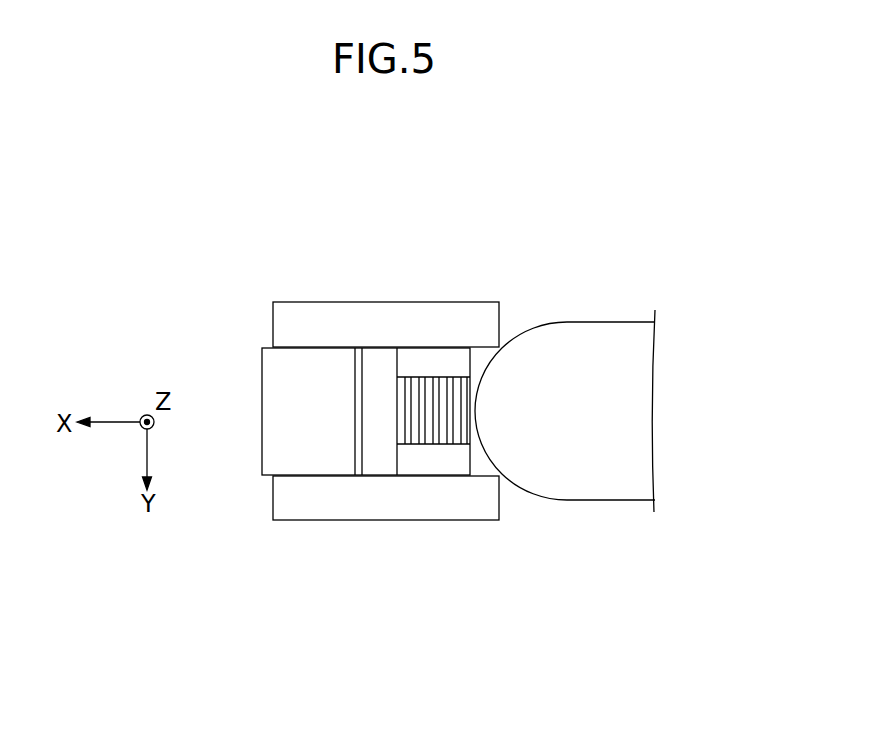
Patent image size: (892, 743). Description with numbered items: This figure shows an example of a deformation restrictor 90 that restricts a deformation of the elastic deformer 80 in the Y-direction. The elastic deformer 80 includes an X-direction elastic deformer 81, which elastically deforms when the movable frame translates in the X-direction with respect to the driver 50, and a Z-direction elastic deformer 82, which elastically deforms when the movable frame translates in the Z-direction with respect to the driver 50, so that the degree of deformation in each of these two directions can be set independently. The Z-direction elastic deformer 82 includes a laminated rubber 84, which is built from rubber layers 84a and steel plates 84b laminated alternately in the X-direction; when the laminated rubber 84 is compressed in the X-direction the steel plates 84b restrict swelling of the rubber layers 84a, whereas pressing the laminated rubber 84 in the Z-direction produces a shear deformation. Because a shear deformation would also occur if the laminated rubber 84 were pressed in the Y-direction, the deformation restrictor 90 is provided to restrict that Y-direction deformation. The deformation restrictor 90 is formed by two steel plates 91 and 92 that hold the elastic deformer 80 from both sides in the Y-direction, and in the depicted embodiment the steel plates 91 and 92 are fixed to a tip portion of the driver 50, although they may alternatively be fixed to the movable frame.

The driver 50 is at (610, 309).
The elastic deformer 80 is at (376, 416).
The X-direction elastic deformer 81 is at (322, 490).
The Z-direction elastic deformer 82 is at (437, 393).
The laminated rubber 84 is at (437, 318).
The rubber layers 84a is at (467, 380).
The steel plates 84b is at (463, 378).
The deformation restrictor 90 is at (386, 412).
The steel plate 91 is at (288, 315).
The steel plate 92 is at (290, 513).